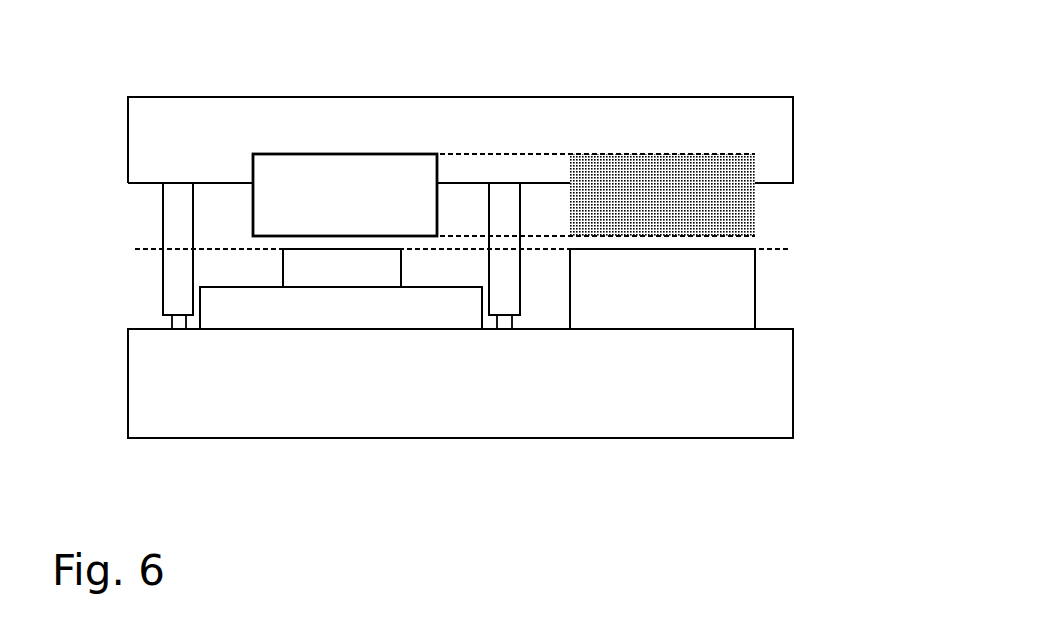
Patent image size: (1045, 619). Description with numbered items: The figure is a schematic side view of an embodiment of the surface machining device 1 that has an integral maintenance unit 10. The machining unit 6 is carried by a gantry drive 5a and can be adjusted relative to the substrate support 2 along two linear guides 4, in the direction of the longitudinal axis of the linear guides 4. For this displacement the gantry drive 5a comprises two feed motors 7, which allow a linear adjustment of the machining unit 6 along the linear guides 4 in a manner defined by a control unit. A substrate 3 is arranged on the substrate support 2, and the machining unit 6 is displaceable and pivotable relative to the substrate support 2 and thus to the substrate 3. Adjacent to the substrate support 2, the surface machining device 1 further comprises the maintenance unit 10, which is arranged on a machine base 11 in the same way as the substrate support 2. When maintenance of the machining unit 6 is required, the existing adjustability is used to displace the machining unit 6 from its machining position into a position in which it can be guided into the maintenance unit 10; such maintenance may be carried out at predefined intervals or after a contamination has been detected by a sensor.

The surface machining device 1 is at (660, 60).
The gantry drive 5a is at (198, 138).
The machining unit 6 is at (272, 195).
The feed motors 7 is at (173, 273).
The linear guides 4 is at (173, 320).
The substrate support 2 is at (303, 313).
The substrate 3 is at (362, 263).
The maintenance unit 10 is at (730, 307).
The machine base 11 is at (503, 410).